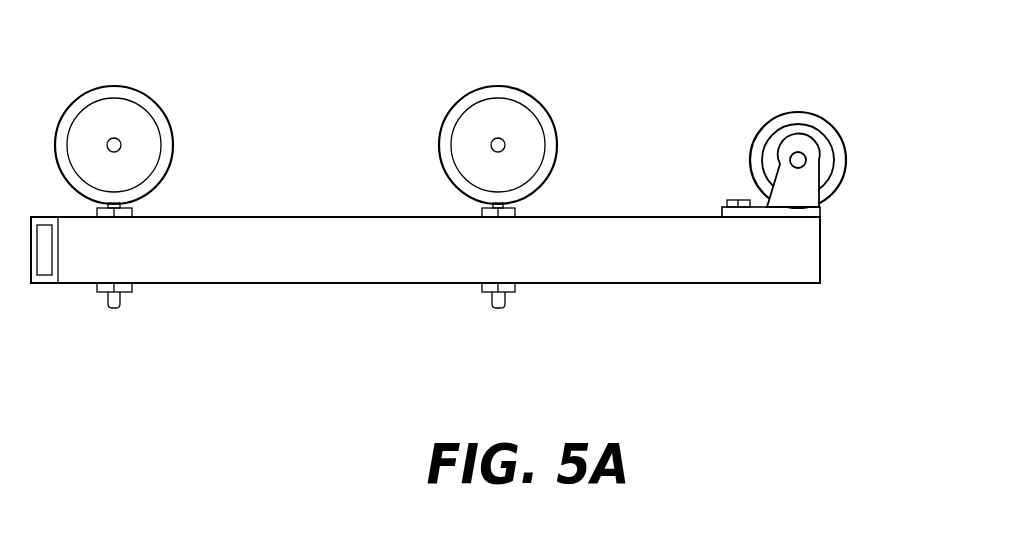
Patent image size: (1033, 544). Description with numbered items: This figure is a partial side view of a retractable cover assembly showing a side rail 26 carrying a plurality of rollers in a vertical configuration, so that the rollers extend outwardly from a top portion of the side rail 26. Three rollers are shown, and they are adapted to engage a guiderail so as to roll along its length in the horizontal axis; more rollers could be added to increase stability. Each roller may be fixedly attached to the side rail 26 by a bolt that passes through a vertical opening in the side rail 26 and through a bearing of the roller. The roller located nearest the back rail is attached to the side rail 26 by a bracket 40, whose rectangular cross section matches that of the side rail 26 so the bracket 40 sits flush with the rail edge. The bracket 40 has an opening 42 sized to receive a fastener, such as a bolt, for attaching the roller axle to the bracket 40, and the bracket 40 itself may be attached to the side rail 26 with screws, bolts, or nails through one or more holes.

The side rail 26 is at (314, 217).
The bracket 40 is at (822, 210).
The opening 42 is at (798, 160).